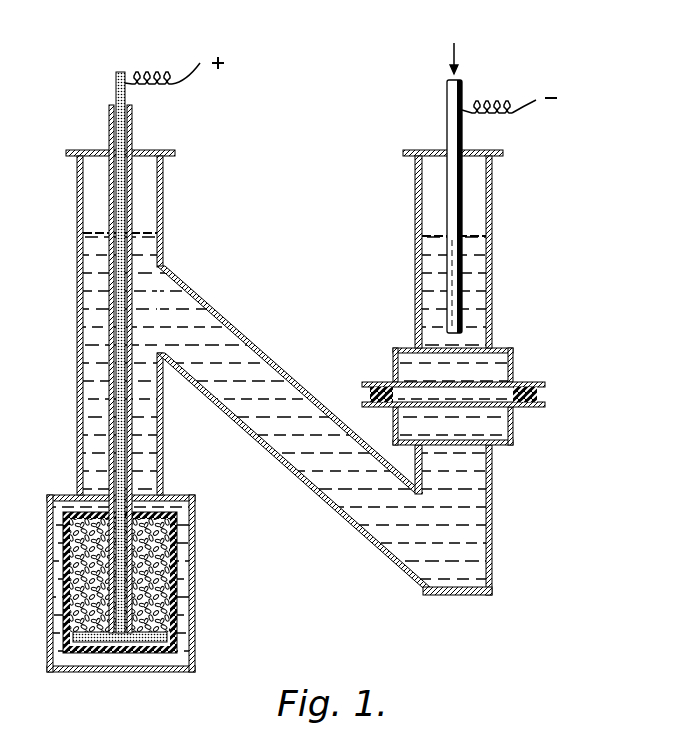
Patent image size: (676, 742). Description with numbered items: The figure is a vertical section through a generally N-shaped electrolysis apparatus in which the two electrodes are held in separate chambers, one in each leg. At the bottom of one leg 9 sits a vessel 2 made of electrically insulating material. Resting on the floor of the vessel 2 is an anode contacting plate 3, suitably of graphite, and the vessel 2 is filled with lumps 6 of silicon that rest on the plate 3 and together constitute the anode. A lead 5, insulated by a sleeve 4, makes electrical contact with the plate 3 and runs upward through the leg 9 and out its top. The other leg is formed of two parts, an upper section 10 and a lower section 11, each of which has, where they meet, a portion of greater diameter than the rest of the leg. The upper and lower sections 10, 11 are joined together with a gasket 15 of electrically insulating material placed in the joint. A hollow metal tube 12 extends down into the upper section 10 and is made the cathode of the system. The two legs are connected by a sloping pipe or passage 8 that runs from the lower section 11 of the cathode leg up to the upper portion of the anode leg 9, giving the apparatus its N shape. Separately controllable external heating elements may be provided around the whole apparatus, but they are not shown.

The vessel 2 is at (175, 640).
The anode contacting plate 3 is at (121, 643).
The sleeve 4 is at (133, 130).
The lead 5 is at (116, 77).
The lumps of silicon 6 is at (178, 597).
The sloping pipe 8 is at (283, 375).
The leg 9 is at (78, 343).
The upper section 10 is at (492, 228).
The lower section 11 is at (492, 518).
The hollow metal tube 12 is at (447, 110).
The gasket 15 is at (548, 394).